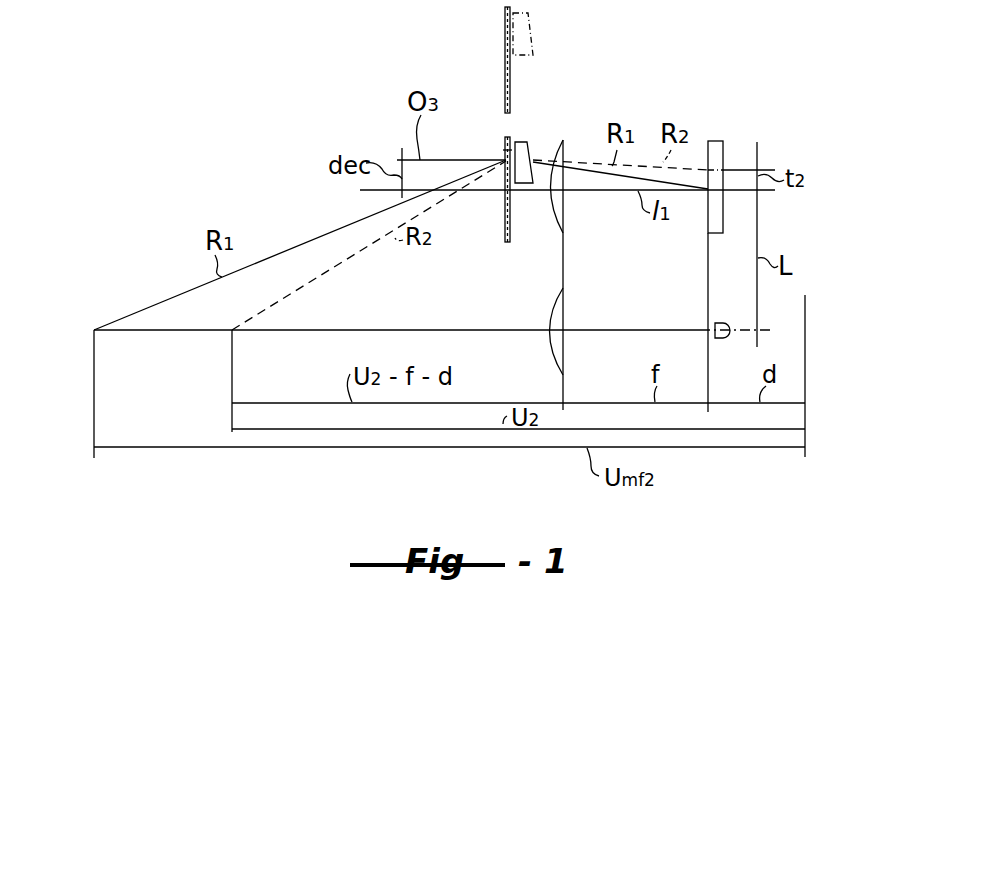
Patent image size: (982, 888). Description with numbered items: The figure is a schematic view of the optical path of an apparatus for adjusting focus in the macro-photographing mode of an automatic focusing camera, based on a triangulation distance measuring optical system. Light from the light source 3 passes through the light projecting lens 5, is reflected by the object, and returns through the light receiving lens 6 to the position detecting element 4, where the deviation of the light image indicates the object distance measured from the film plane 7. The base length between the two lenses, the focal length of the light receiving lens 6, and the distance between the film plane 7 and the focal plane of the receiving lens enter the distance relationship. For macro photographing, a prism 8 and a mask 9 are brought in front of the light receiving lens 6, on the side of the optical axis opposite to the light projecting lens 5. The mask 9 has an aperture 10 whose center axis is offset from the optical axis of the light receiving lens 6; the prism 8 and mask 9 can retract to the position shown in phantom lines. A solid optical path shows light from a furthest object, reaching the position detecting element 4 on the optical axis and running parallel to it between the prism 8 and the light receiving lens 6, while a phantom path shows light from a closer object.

The light source 3 is at (717, 322).
The position detecting element 4 is at (714, 141).
The light projecting lens 5 is at (563, 308).
The light receiving lens 6 is at (563, 140).
The film plane 7 is at (808, 300).
The prism 8 is at (530, 142).
The mask 9 is at (505, 46).
The aperture 10 is at (503, 150).